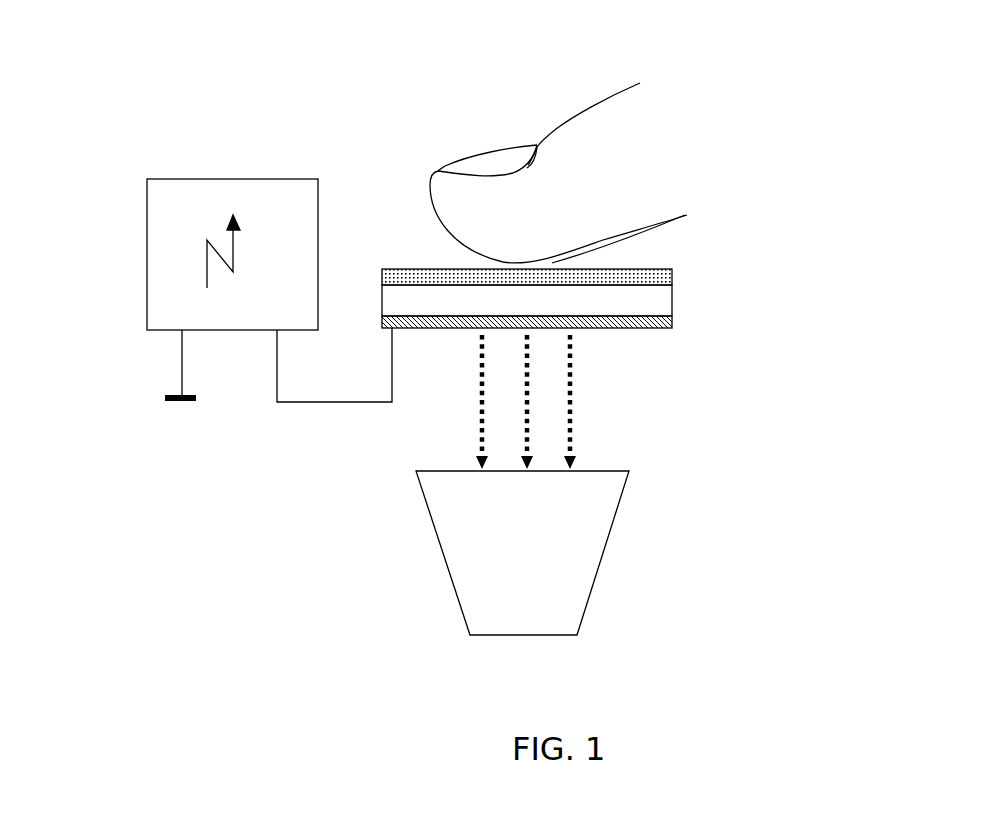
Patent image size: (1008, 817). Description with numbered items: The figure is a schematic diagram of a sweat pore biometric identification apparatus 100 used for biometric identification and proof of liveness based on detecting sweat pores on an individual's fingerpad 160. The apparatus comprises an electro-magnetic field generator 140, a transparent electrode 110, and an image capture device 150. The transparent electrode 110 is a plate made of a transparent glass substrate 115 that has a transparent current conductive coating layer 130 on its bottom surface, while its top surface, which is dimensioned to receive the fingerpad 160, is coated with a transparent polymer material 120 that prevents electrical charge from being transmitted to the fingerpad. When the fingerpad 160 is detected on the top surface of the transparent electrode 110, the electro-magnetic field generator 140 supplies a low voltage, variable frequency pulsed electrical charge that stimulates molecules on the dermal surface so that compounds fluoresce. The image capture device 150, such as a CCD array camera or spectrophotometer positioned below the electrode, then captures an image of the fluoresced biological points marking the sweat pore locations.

The sweat pore biometric identification apparatus 100 is at (322, 75).
The transparent electrode 110 is at (726, 325).
The transparent glass substrate 115 is at (673, 297).
The transparent polymer material 120 is at (673, 269).
The transparent current conductive coating layer 130 is at (672, 328).
The electro-magnetic field generator 140 is at (147, 248).
The image capture device 150 is at (617, 508).
The fingerpad 160 is at (540, 131).